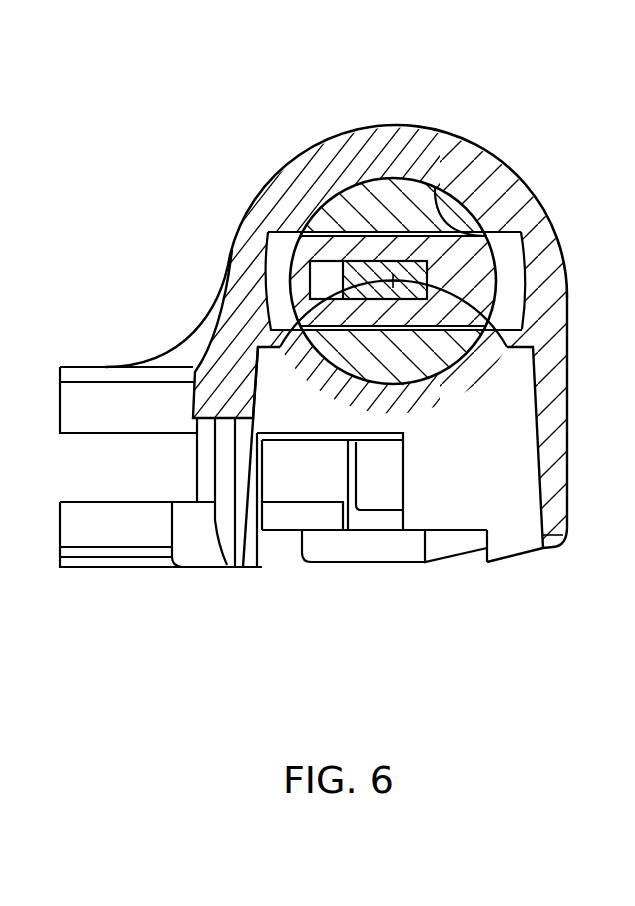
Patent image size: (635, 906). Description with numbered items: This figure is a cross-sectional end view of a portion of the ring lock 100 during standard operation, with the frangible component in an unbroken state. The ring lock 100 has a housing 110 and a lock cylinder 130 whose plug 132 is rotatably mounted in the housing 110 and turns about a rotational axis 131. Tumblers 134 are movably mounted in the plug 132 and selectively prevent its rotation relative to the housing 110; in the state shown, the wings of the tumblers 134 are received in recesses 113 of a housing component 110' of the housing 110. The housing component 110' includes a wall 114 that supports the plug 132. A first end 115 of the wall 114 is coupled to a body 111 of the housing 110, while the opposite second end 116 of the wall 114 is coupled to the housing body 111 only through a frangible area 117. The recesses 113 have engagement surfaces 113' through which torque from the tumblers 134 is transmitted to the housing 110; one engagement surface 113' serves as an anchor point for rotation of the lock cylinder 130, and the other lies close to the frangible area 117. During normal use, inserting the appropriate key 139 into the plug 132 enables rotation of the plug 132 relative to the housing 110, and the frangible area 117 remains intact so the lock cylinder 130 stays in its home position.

The ring lock 100 is at (235, 68).
The housing 110 is at (317, 295).
The housing component 110' is at (398, 182).
The body 111 is at (503, 175).
The recesses 113 is at (326, 368).
The engagement surfaces 113' is at (423, 243).
The wall 114 is at (452, 430).
The first end 115 is at (272, 350).
The second end 116 is at (490, 350).
The frangible area 117 is at (518, 344).
The lock cylinder 130 is at (474, 367).
The rotational axis 131 is at (400, 256).
The plug 132 is at (383, 185).
The tumblers 134 is at (441, 230).
The key 139 is at (413, 300).